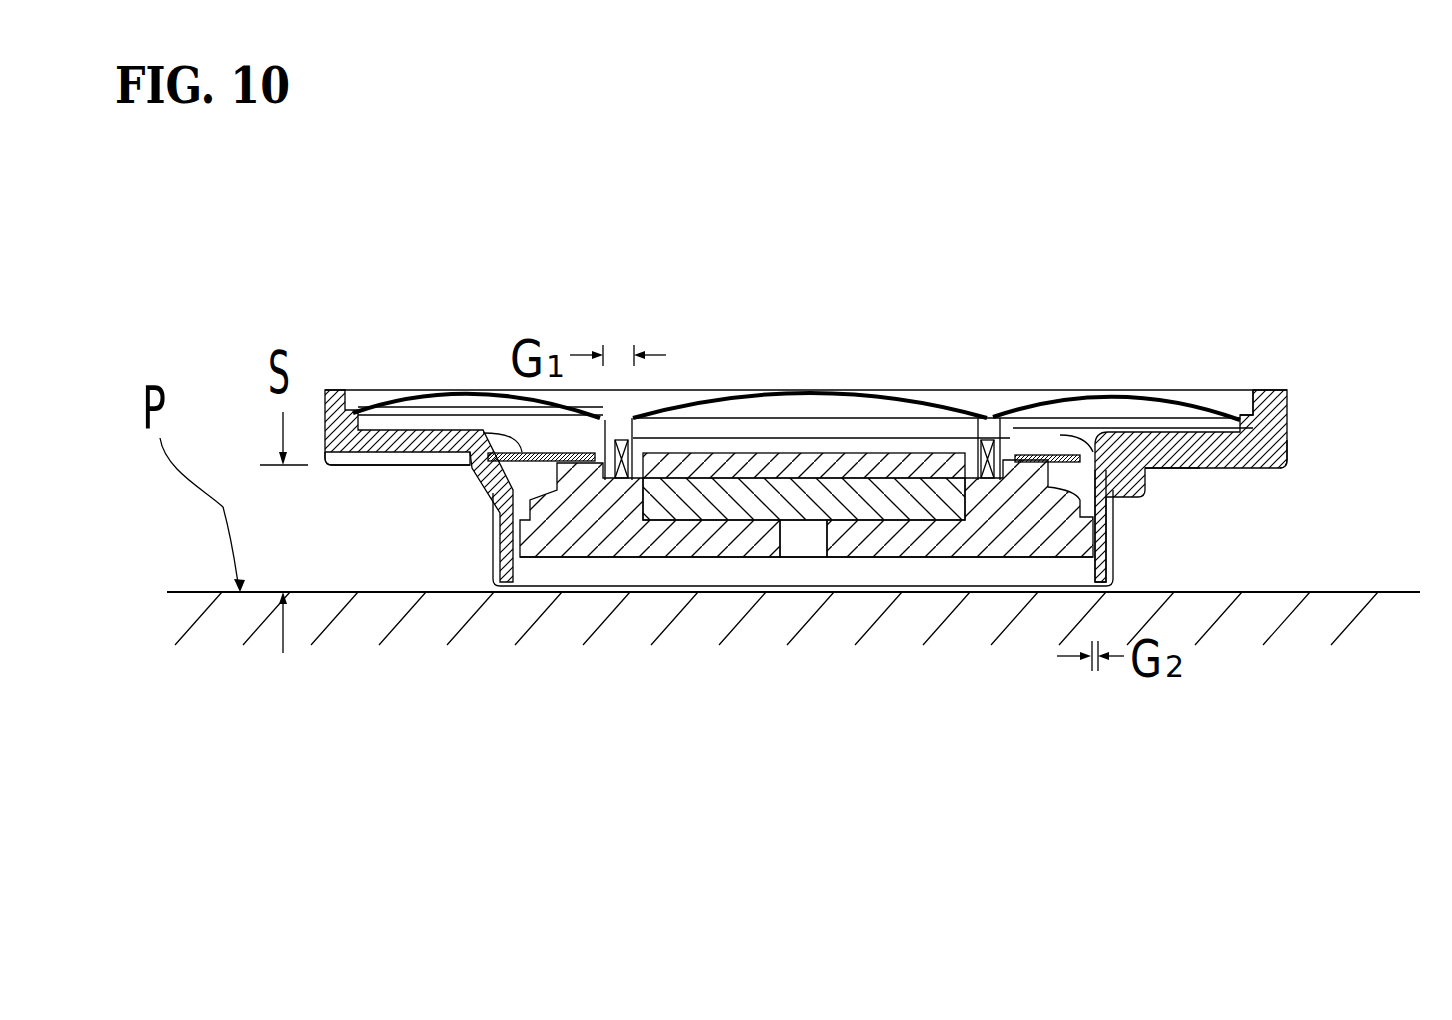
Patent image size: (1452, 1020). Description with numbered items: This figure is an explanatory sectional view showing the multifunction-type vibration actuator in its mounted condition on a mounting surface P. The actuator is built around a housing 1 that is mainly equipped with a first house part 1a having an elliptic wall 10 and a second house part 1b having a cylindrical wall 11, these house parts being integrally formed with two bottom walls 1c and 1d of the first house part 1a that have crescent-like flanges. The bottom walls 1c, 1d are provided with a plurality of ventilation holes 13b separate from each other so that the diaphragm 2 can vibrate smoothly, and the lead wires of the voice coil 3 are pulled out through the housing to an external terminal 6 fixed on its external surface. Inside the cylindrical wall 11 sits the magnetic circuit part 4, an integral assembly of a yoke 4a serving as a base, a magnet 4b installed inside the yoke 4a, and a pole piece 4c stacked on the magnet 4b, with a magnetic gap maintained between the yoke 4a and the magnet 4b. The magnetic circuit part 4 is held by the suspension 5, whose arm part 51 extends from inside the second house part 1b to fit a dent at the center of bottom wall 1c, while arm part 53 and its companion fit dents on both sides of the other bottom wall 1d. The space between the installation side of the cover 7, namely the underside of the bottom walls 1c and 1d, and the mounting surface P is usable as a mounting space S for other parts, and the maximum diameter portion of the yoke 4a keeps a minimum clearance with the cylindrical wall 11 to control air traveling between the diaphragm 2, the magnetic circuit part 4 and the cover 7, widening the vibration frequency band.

The housing 1 is at (866, 577).
The first house part 1a is at (1296, 472).
The second house part 1b is at (1163, 453).
The bottom wall 1c is at (410, 440).
The bottom wall 1d is at (1230, 455).
The diaphragm 2 is at (933, 400).
The voice coil 3 is at (620, 478).
The magnetic circuit part 4 is at (806, 501).
The yoke 4a is at (907, 545).
The magnet 4b is at (718, 487).
The pole piece 4c is at (843, 465).
The suspension 5 is at (803, 306).
The arm part 51 is at (518, 448).
The arm part 53 is at (1060, 452).
The external terminal 6 is at (368, 470).
The cover 7 is at (767, 578).
The elliptic wall 10 is at (1273, 392).
The cylindrical wall 11 is at (1090, 567).
The ventilation holes 13b is at (1197, 465).